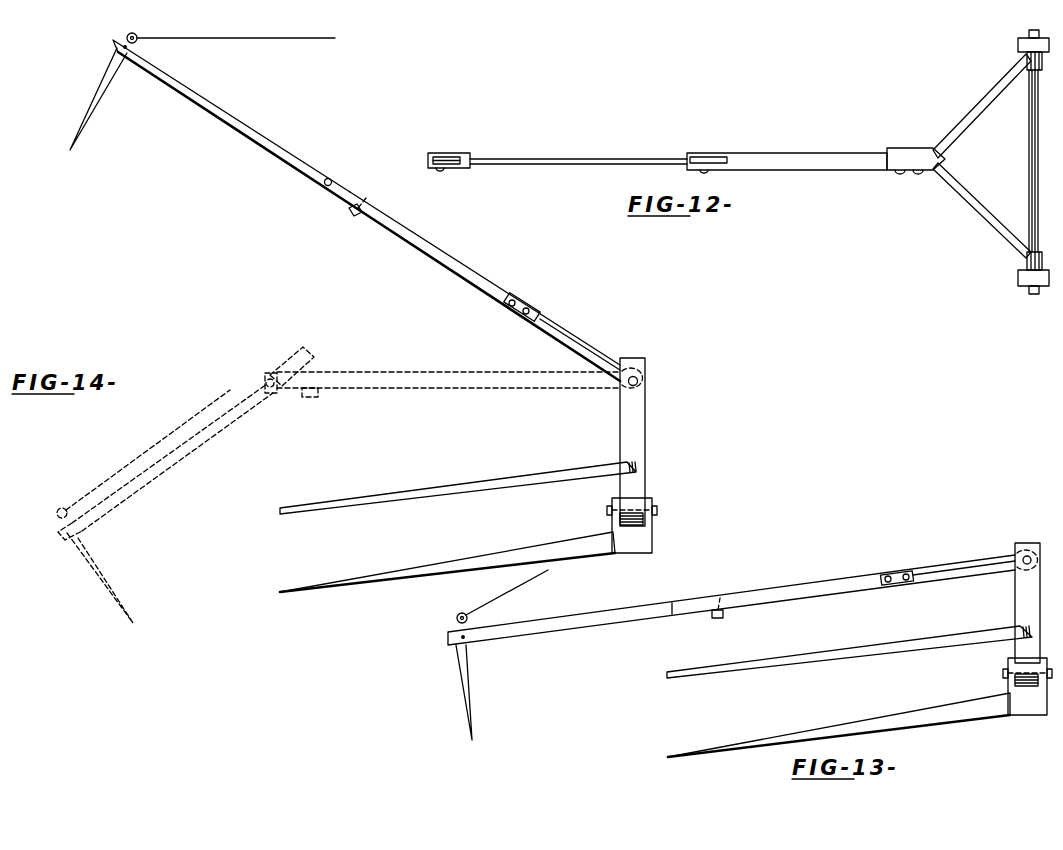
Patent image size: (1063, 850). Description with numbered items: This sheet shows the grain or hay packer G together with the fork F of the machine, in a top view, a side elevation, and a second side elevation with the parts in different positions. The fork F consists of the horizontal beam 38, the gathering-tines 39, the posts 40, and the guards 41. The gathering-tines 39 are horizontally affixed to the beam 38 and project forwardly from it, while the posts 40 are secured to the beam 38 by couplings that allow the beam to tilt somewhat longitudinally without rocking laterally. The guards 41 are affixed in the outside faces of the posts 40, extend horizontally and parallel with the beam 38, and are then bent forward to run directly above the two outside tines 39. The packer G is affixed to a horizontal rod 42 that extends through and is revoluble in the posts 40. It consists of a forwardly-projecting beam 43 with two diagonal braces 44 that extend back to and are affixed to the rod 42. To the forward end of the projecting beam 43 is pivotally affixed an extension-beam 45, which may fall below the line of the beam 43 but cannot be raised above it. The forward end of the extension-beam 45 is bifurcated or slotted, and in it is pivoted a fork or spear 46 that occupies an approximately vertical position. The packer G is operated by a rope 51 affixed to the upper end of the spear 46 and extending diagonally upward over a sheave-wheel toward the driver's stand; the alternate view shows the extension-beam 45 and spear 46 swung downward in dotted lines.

In FIG. 14, the horizontal beam 38 is at (652, 540).
In FIG. 13, the horizontal beam 38 is at (1040, 702).
In FIG. 14, the gathering-tines 39 is at (447, 562).
In FIG. 13, the gathering-tines 39 is at (839, 725).
In FIG. 12, the posts 40 is at (1018, 47).
In FIG. 14, the posts 40 is at (620, 423).
In FIG. 13, the posts 40 is at (1017, 603).
In FIG. 14, the guards 41 is at (458, 488).
In FIG. 13, the guards 41 is at (849, 652).
In FIG. 12, the horizontal rod 42 is at (1029, 163).
In FIG. 12, the forwardly-projecting beam 43 is at (816, 154).
In FIG. 14, the forwardly-projecting beam 43 is at (442, 301).
In FIG. 13, the forwardly-projecting beam 43 is at (843, 585).
In FIG. 12, the diagonal braces 44 is at (982, 156).
In FIG. 14, the diagonal braces 44 is at (549, 330).
In FIG. 13, the diagonal braces 44 is at (947, 572).
In FIG. 12, the extension-beam 45 is at (557, 154).
In FIG. 14, the extension-beam 45 is at (236, 129).
In FIG. 13, the extension-beam 45 is at (560, 622).
In FIG. 14, the fork or spear 46 is at (100, 334).
In FIG. 13, the fork or spear 46 is at (457, 688).
In FIG. 14, the rope 51 is at (196, 266).
In FIG. 13, the rope 51 is at (502, 596).
In FIG. 12, the grain or hay packer G is at (708, 153).
In FIG. 14, the grain or hay packer G is at (334, 306).
In FIG. 13, the grain or hay packer G is at (763, 621).
In FIG. 14, the fork F is at (620, 516).
In FIG. 13, the fork F is at (1013, 680).